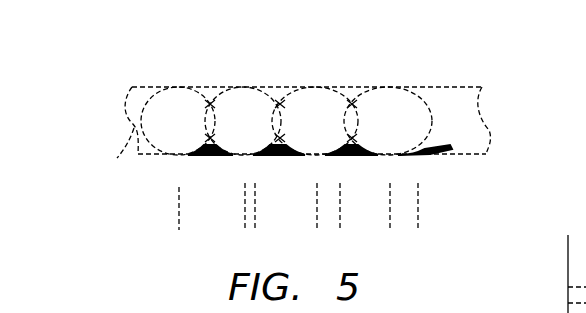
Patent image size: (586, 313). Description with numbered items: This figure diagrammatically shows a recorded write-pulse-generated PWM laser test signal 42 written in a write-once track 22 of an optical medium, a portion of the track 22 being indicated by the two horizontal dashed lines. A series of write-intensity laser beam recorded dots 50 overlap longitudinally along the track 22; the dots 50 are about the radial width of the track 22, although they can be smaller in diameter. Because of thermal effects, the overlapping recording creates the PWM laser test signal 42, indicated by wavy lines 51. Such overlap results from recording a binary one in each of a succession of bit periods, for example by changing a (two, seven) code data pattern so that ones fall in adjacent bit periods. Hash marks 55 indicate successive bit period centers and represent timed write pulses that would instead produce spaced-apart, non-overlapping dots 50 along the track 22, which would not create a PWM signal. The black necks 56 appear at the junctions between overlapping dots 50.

The track 22 is at (122, 149).
The write-pulse-generated PWM laser test signal 42 is at (353, 70).
The recorded dots 50 is at (178, 88).
The wavy lines 51 is at (210, 100).
The hash marks 55 is at (178, 208).
The sintered necks 56 is at (272, 173).